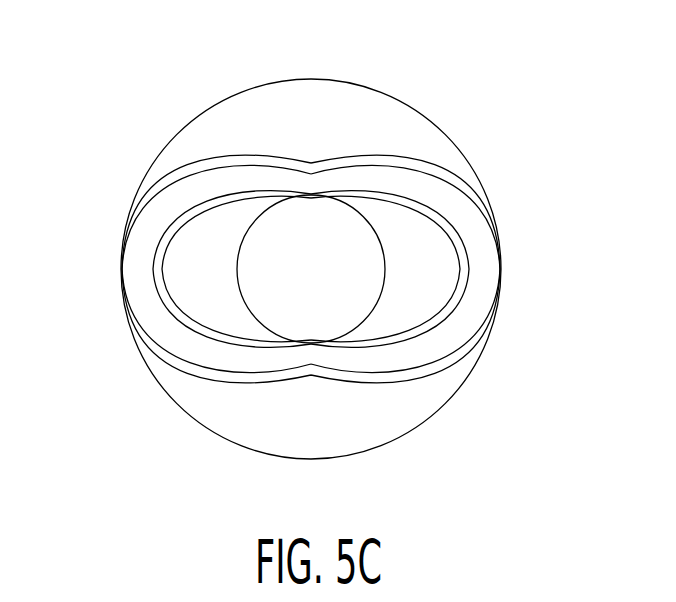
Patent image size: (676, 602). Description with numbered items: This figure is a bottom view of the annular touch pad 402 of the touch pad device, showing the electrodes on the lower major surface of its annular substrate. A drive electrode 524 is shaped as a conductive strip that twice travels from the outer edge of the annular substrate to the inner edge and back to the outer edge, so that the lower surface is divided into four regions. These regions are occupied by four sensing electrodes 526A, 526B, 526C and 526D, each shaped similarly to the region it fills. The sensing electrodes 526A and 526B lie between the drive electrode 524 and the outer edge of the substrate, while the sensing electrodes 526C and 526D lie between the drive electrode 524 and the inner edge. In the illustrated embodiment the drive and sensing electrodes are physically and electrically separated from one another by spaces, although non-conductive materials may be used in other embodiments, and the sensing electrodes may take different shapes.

The annular touch pad 402 is at (520, 163).
The drive electrode 524 is at (142, 268).
The sensing electrode 526A is at (362, 107).
The sensing electrode 526B is at (374, 422).
The sensing electrode 526C is at (210, 303).
The sensing electrode 526D is at (418, 292).